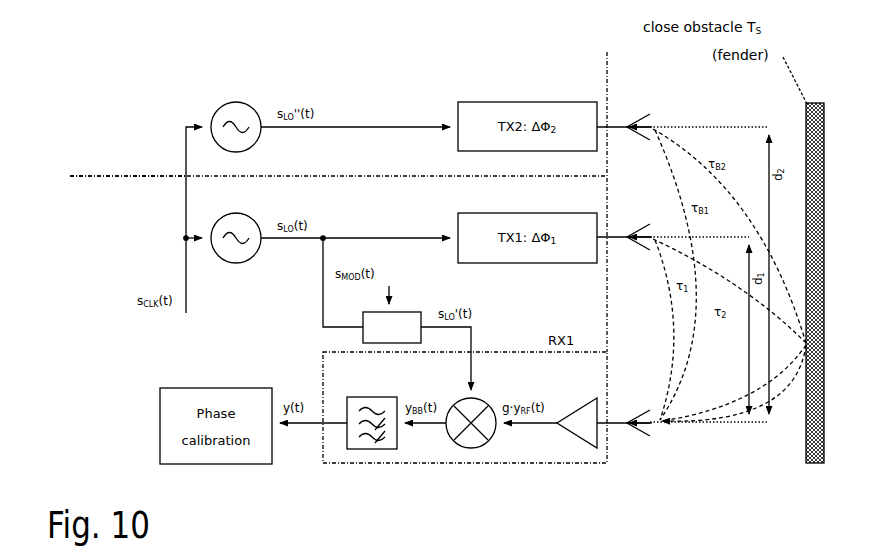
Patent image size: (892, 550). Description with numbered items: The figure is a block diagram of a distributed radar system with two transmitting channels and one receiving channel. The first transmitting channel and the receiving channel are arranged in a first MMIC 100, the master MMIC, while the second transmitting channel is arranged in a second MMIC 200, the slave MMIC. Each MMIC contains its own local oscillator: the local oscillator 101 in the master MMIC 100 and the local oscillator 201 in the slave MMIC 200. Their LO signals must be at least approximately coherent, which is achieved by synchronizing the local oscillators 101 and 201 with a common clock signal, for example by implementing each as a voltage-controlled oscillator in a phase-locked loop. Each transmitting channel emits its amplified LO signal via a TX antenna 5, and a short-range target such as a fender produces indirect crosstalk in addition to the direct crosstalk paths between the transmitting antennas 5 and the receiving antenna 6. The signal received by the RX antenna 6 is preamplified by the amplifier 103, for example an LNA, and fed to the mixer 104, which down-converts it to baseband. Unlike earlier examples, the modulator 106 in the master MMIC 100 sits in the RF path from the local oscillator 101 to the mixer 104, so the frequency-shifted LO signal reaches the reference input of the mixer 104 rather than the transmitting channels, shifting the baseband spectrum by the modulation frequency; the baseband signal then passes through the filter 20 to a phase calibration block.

The TX antenna 5 is at (641, 112).
The RX antenna 6 is at (641, 410).
The low-pass filter 20 is at (368, 397).
The first MMIC 100 is at (128, 186).
The local oscillator 101 is at (236, 263).
The amplifier 103 is at (582, 399).
The mixer 104 is at (489, 405).
The modulator 106 is at (405, 311).
The second MMIC 200 is at (338, 167).
The local oscillator 201 is at (240, 102).